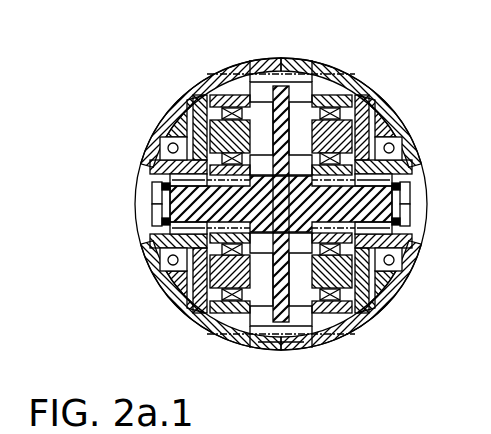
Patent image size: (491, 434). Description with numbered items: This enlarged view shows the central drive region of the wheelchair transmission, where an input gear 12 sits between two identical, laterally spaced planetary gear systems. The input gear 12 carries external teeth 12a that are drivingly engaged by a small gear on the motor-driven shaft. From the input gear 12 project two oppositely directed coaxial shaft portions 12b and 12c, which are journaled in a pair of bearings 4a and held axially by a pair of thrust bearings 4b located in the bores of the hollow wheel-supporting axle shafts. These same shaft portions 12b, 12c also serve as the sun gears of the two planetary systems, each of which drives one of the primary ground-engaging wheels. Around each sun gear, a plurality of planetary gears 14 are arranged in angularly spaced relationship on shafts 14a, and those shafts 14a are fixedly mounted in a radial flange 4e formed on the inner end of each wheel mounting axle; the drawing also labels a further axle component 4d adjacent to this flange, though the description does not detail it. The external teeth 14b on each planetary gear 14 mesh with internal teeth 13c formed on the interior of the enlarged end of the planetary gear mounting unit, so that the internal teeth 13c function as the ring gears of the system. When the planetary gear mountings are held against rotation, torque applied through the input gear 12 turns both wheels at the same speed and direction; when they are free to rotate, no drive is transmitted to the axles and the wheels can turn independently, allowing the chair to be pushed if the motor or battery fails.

The input gear 12 is at (281, 204).
The external teeth 12a is at (276, 349).
The shaft portion 12b is at (390, 200).
The shaft portion 12c is at (172, 200).
The internal teeth 13c is at (250, 312).
The planetary gears 14 is at (312, 252).
The shafts 14a is at (375, 291).
The external teeth 14b is at (317, 313).
The bearings 4a is at (404, 186).
The thrust bearings 4b is at (397, 181).
The locking pin 4d is at (394, 278).
The radial flange 4e is at (367, 305).